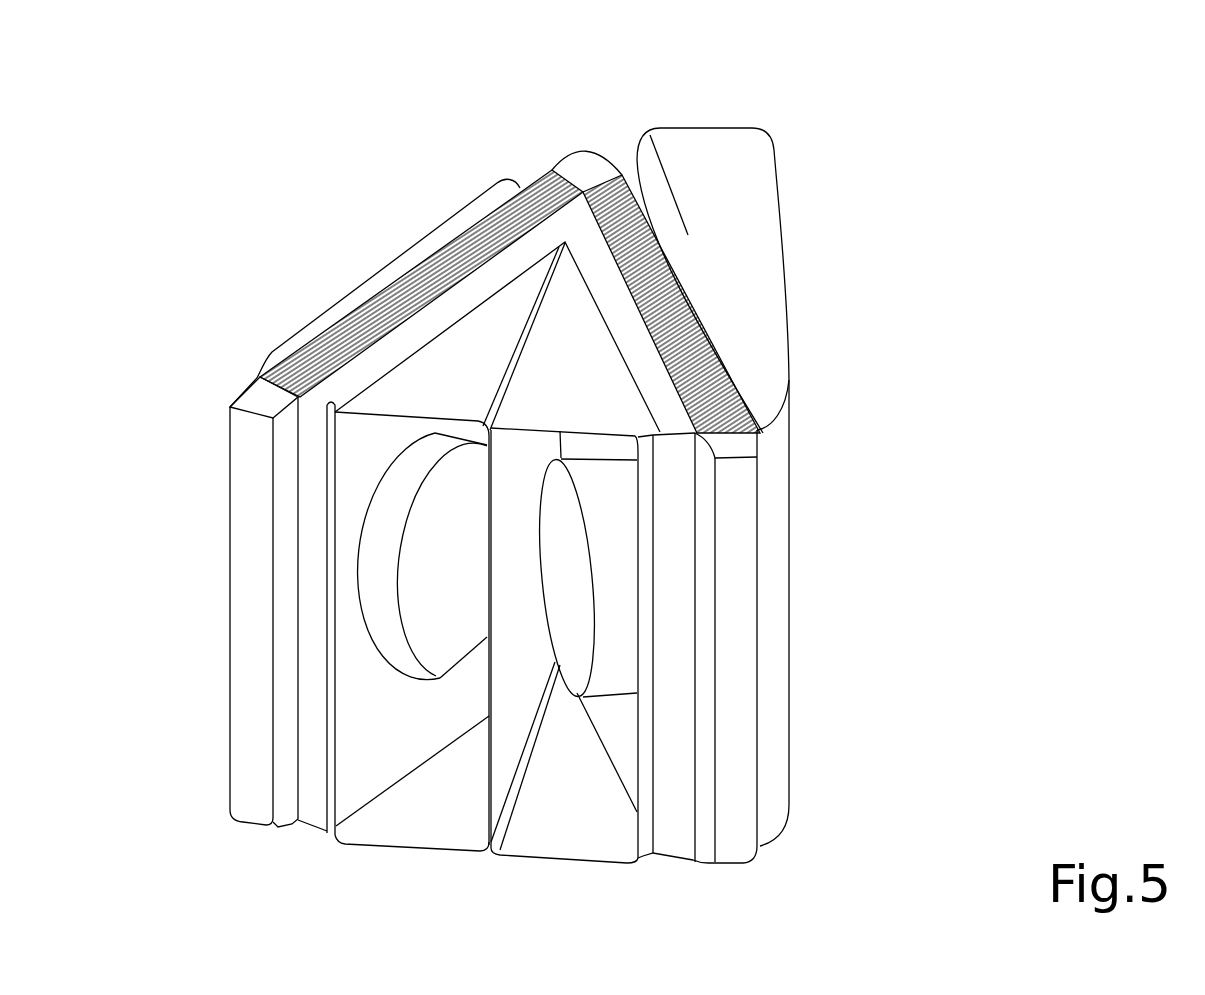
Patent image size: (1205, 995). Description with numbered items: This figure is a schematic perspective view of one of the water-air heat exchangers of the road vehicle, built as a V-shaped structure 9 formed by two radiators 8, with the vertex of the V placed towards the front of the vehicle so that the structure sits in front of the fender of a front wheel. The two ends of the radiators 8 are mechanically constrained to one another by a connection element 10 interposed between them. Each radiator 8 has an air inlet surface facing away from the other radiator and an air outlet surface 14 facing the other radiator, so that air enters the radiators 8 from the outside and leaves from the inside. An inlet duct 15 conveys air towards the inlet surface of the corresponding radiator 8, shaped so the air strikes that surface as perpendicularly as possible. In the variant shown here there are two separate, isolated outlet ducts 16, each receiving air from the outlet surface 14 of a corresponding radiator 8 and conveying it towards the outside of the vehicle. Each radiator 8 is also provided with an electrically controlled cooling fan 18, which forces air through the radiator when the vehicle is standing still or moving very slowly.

The radiator 8 is at (440, 265).
The V-shaped structure 9 is at (1009, 264).
The connection element 10 is at (582, 170).
The air outlet surface 14 is at (380, 709).
The inlet duct 15 is at (722, 216).
The outlet duct 16 is at (403, 793).
The cooling fan 18 is at (448, 583).